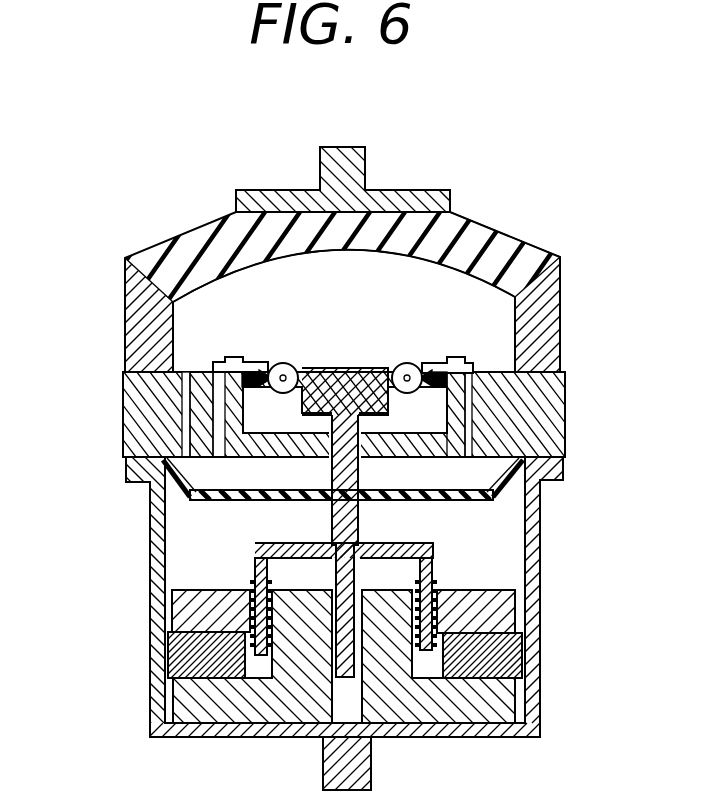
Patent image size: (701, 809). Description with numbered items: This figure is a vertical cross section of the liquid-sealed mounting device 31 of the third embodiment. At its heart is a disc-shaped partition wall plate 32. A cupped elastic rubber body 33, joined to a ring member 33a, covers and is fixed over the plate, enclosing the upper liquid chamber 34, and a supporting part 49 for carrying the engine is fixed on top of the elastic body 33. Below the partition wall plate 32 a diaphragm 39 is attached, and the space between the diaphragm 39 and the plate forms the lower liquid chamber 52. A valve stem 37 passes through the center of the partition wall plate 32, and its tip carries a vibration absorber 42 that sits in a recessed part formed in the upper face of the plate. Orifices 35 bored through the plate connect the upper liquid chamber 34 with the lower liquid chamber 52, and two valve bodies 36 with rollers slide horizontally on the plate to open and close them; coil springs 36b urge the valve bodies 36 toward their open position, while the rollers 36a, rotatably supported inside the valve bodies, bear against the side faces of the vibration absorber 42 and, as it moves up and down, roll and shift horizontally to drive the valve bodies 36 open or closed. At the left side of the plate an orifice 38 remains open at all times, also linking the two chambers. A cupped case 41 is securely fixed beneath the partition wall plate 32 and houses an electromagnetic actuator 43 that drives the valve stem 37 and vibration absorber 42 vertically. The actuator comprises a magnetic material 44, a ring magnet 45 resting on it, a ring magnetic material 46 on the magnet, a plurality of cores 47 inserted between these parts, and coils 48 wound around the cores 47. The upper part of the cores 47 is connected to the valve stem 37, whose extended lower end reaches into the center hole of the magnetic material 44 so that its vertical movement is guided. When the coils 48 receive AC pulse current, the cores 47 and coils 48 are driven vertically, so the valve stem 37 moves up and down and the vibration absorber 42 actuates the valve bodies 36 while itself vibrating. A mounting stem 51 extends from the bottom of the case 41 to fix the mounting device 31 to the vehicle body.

The liquid-sealed mounting device 31 is at (94, 268).
The partition wall plate 32 is at (337, 377).
The elastic rubber body 33 is at (484, 228).
The ring member 33a is at (540, 305).
The upper liquid chamber 34 is at (561, 280).
The orifices 35 is at (220, 396).
The valve bodies 36 is at (247, 362).
The rollers 36a is at (289, 362).
The coil springs 36b is at (257, 388).
The valve stem 37 is at (360, 508).
The orifice 38 is at (182, 416).
The diaphragm 39 is at (455, 500).
The case 41 is at (541, 628).
The vibration absorber 42 is at (348, 367).
The electromagnetic actuator 43 is at (346, 582).
The magnetic material 44 is at (244, 712).
The ring magnet 45 is at (173, 658).
The ring magnetic material 46 is at (182, 603).
The cores 47 is at (253, 558).
The coils 48 is at (272, 582).
The supporting part 49 is at (366, 163).
The mounting stem 51 is at (372, 762).
The lower liquid chamber 52 is at (541, 493).